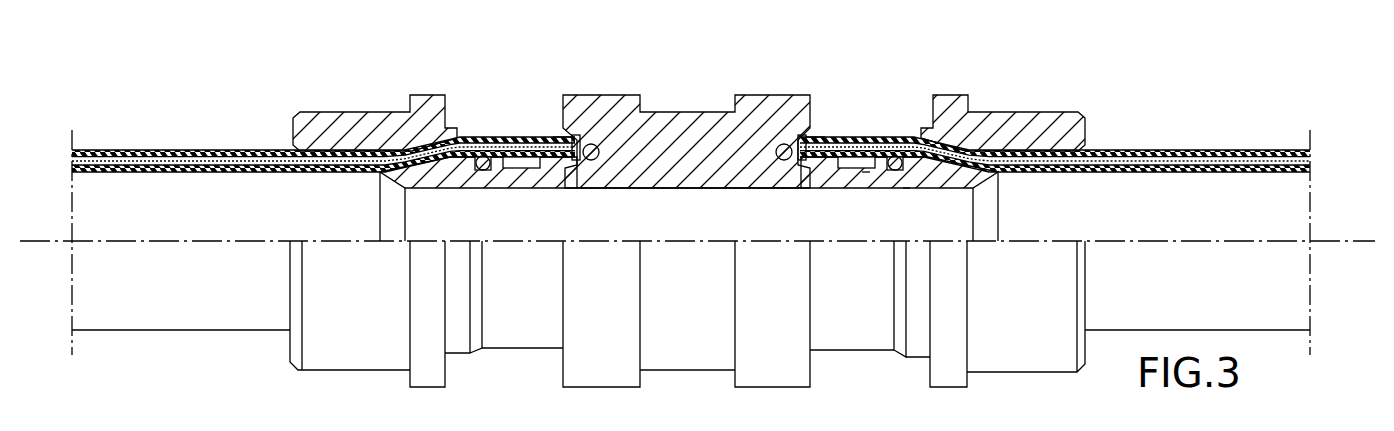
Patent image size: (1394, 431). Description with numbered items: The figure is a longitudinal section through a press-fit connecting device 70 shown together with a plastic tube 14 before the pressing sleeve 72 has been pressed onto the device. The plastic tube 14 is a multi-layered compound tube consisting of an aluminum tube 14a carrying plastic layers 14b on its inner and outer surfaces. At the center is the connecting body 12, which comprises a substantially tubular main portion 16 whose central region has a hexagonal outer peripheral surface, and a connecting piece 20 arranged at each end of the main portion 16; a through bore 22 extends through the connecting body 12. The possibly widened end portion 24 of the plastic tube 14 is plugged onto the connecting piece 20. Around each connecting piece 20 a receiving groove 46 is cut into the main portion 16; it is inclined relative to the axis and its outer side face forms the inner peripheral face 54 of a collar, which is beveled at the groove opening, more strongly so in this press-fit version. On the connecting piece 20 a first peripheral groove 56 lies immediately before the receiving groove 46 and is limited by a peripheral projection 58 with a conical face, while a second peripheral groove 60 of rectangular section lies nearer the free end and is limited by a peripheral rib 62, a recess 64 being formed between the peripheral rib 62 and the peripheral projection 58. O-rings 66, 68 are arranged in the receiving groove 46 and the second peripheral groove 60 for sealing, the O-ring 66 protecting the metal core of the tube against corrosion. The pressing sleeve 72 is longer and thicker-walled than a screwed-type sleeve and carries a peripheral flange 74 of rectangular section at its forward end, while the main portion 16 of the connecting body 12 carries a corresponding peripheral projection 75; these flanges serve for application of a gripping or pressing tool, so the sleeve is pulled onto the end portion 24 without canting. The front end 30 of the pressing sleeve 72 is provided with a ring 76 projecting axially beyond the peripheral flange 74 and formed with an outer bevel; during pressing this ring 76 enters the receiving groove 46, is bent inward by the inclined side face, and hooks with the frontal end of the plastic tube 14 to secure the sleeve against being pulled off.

The connecting body 12 is at (672, 105).
The plastic tube 14 is at (1200, 148).
The aluminum tube 14a is at (1312, 162).
The plastic layers 14b is at (1258, 157).
The main portion 16 is at (620, 97).
The connecting piece 20 is at (428, 176).
The through bore 22 is at (704, 192).
The end portion 24 is at (521, 130).
The front end 30 is at (924, 80).
The receiving groove 46 is at (798, 168).
The inner peripheral face 54 is at (573, 134).
The first peripheral groove 56 is at (563, 165).
The peripheral projection 58 is at (552, 166).
The second peripheral groove 60 is at (494, 171).
The peripheral rib 62 is at (860, 175).
The recess 64 is at (850, 170).
The O-ring 66 is at (783, 148).
The O-ring 68 is at (903, 190).
The press-fit connecting device 70 is at (714, 73).
The pressing sleeve 72 is at (364, 114).
The peripheral flange 74 is at (441, 96).
The peripheral projection 75 is at (761, 100).
The ring 76 is at (455, 134).